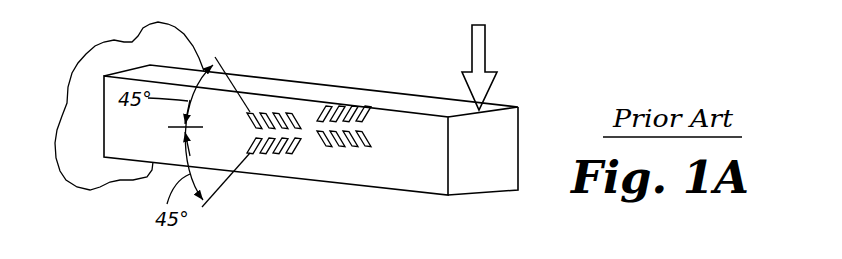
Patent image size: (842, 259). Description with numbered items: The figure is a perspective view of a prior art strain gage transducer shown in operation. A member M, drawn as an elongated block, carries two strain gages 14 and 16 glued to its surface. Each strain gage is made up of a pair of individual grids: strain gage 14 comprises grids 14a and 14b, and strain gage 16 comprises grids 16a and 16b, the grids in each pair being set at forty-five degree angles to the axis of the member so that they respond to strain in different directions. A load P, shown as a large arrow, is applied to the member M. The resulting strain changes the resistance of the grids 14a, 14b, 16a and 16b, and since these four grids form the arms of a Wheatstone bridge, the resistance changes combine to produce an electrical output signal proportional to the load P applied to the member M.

The strain gage 14 is at (248, 134).
The strain gage grid 14a is at (272, 111).
The strain gage grid 14b is at (268, 156).
The strain gage 16 is at (379, 138).
The strain gage grid 16a is at (367, 106).
The strain gage grid 16b is at (364, 152).
The member M is at (318, 182).
The load P is at (486, 51).